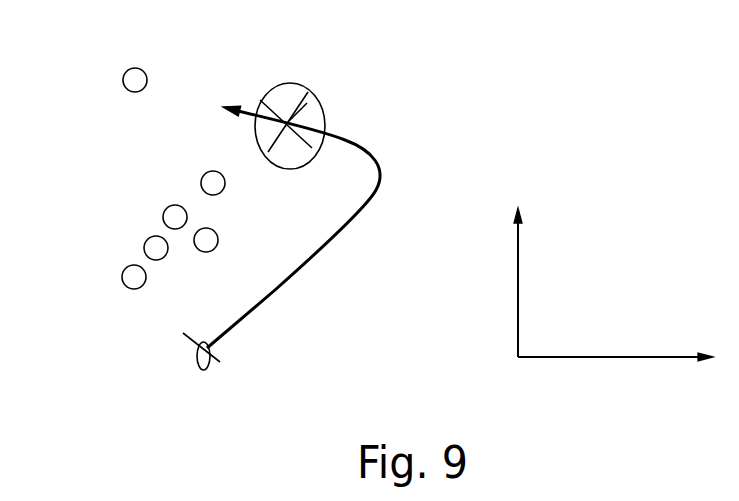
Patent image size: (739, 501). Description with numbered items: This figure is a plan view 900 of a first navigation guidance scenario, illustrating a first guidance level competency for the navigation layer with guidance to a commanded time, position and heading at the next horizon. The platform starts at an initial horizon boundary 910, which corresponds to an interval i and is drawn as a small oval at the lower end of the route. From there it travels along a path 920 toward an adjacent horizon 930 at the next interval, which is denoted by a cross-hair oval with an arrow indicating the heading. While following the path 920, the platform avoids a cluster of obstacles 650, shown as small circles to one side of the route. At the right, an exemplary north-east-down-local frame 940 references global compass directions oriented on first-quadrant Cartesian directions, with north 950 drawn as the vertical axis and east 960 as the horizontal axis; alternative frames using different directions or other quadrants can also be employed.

The plan view 900 is at (636, 61).
The obstacles 650 is at (163, 213).
The adjacent horizon 930 is at (326, 120).
The path 920 is at (333, 233).
The initial horizon boundary 910 is at (210, 348).
The north-east-down-local (NEDL) frame 940 is at (657, 304).
The north 950 is at (530, 282).
The east 960 is at (615, 374).